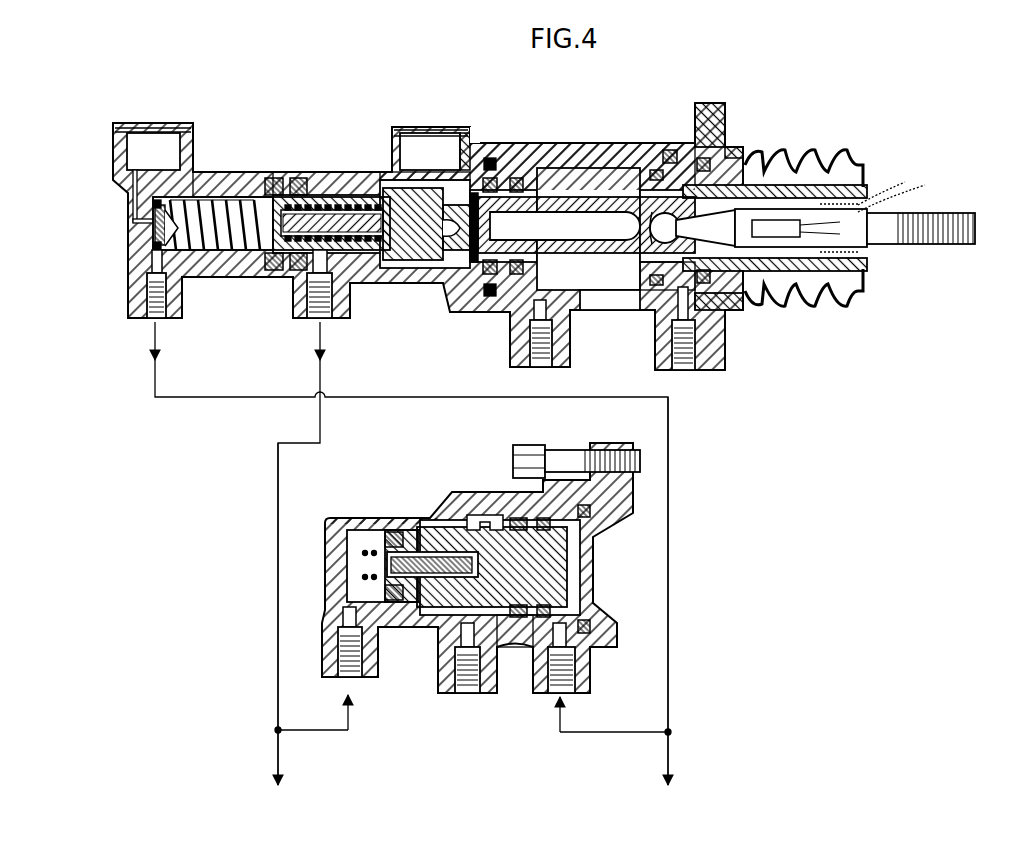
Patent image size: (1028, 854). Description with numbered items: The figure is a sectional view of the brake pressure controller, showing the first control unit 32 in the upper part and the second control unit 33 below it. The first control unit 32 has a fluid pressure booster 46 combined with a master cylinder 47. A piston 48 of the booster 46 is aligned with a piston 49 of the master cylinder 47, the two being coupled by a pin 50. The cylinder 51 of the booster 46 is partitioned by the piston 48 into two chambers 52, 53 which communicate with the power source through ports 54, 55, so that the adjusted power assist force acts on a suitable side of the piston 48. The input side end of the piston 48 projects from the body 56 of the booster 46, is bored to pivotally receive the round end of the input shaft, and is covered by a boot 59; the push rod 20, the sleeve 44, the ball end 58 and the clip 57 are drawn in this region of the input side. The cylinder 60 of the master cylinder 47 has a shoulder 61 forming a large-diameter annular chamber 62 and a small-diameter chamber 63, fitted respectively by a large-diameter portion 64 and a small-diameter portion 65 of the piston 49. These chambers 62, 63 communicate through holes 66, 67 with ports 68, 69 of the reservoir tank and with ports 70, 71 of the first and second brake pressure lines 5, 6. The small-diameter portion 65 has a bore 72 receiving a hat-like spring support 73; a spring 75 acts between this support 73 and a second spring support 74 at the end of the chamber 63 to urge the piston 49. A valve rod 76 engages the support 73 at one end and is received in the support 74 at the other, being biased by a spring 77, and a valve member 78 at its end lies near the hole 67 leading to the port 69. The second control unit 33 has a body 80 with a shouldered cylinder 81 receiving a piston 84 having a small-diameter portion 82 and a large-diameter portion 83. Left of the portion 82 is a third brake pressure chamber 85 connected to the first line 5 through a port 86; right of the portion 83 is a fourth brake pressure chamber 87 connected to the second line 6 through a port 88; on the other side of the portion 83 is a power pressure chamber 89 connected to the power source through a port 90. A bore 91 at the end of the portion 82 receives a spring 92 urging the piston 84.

The first brake pressure line 5 is at (278, 548).
The second brake pressure line 6 is at (668, 583).
The push rod 20 is at (880, 237).
The first control unit 32 is at (474, 138).
The second control unit 33 is at (385, 500).
The push rod sleeve 44 is at (785, 247).
The fluid pressure booster 46 is at (600, 165).
The master cylinder 47 is at (248, 168).
The piston 48 is at (626, 195).
The piston 49 is at (378, 168).
The pin 50 is at (480, 195).
The cylinder 51 is at (562, 168).
The chamber 52 is at (603, 300).
The chamber 53 is at (710, 302).
The port 54 is at (537, 366).
The port 55 is at (690, 370).
The body 56 is at (727, 106).
The retaining clip 57 is at (872, 200).
The ball joint 58 is at (669, 212).
The boot 59 is at (800, 163).
The cylinder 60 is at (205, 195).
The shoulder 61 is at (333, 180).
The large-diameter annular chamber 62 is at (386, 260).
The small-diameter chamber 63 is at (207, 250).
The large-diameter portion 64 is at (442, 262).
The small-diameter portion 65 is at (287, 265).
The hole 66 is at (420, 130).
The hole 67 is at (137, 185).
The port 68 is at (442, 127).
The port 69 is at (160, 128).
The port 70 is at (313, 320).
The port 71 is at (147, 318).
The bore 72 is at (352, 195).
The spring support 73 is at (291, 178).
The spring support 74 is at (160, 242).
The spring 75 is at (166, 246).
The valve rod 76 is at (229, 250).
The spring 77 is at (158, 232).
The valve member 78 is at (155, 220).
The body 80 is at (347, 520).
The cylinder 81 is at (481, 518).
The small-diameter portion 82 is at (413, 535).
The large-diameter portion 83 is at (527, 620).
The piston 84 is at (565, 566).
The third brake pressure chamber 85 is at (347, 593).
The port 86 is at (347, 675).
The fourth brake pressure chamber 87 is at (582, 633).
The port 88 is at (553, 694).
The power pressure chamber 89 is at (477, 515).
The port 90 is at (467, 694).
The bore 91 is at (427, 604).
The spring 92 is at (363, 553).